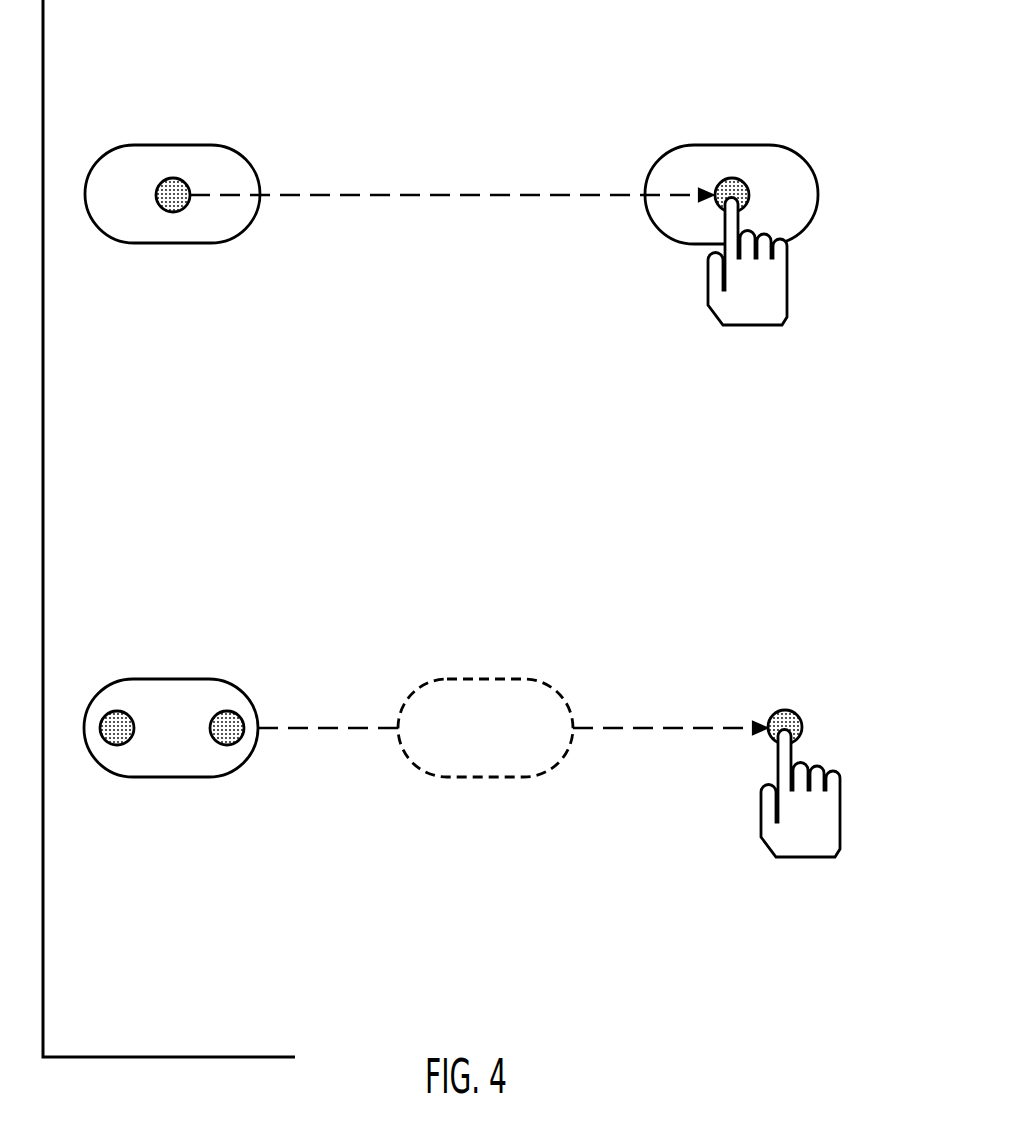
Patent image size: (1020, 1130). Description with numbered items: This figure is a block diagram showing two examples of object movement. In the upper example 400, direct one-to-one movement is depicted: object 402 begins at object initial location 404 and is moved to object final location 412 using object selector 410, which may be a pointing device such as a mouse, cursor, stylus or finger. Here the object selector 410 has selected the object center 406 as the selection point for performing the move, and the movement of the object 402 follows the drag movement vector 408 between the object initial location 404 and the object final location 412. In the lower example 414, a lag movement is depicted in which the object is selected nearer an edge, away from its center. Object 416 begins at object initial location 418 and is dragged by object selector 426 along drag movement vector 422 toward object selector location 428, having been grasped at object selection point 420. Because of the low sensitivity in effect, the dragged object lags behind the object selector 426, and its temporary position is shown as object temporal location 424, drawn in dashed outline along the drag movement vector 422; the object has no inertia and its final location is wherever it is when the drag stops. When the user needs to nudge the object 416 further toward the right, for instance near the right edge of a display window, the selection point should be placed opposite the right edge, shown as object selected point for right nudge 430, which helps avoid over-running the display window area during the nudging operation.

The example 400 is at (436, 380).
The object 402 is at (133, 243).
The object initial location 404 is at (172, 145).
The object center 406 is at (190, 203).
The drag movement vector 408 is at (430, 190).
The object selector 410 is at (707, 290).
The object final location 412 is at (733, 145).
The example 414 is at (466, 894).
The object 416 is at (132, 777).
The object initial location 418 is at (170, 679).
The object selection point 420 is at (240, 738).
The drag movement vector 422 is at (668, 725).
The object temporal location 424 is at (480, 679).
The object selector 426 is at (760, 825).
The object selector location 428 is at (803, 715).
The object selected point for right nudge 430 is at (127, 738).